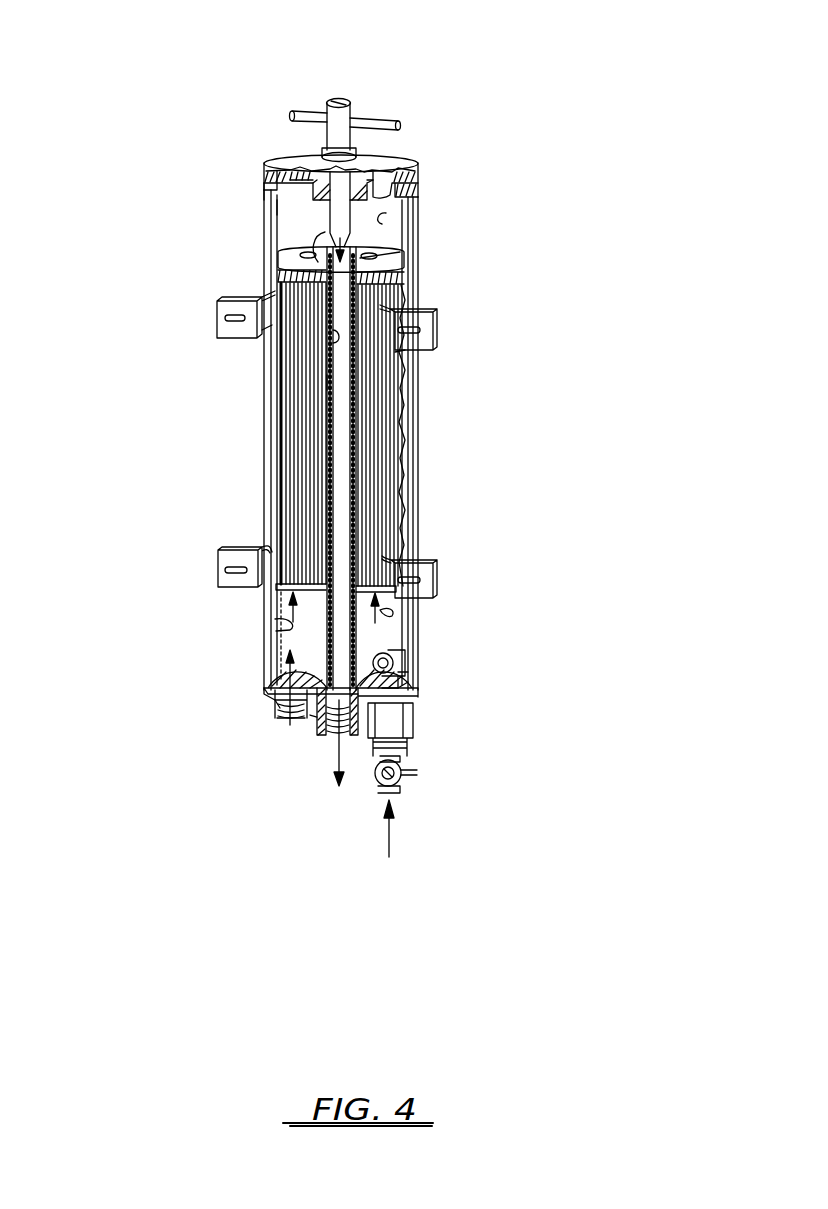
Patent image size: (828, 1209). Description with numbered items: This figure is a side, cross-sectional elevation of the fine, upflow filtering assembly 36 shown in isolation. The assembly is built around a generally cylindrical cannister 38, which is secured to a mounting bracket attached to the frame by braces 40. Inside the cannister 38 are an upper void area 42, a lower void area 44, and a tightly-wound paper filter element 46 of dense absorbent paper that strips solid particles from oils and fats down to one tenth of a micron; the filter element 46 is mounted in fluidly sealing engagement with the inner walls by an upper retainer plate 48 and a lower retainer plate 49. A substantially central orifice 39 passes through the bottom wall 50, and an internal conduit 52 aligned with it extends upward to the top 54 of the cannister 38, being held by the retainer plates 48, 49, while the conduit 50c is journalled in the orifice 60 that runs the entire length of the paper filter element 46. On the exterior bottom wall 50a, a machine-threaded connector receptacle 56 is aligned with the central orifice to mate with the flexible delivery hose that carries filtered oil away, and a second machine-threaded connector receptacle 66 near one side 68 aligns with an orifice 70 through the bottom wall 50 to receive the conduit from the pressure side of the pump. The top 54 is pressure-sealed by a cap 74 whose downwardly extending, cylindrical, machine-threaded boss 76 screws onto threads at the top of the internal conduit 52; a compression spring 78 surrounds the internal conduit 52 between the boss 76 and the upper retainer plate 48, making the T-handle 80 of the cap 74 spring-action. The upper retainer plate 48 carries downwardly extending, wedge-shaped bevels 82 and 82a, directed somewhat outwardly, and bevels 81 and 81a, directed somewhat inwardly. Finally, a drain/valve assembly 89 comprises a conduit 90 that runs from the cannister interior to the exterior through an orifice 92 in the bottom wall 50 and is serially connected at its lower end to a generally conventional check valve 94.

The fine filtering assembly 36 is at (430, 410).
The cannister 38 is at (382, 268).
The central orifice 39 is at (322, 737).
The braces 40 is at (222, 326).
The upper void area 42 is at (384, 222).
The lower void area 44 is at (396, 614).
The paper filter element 46 is at (400, 497).
The upper retainer plate 48 is at (385, 258).
The lower retainer plate 49 is at (283, 590).
The bottom wall 50 is at (312, 717).
The exterior bottom wall 50a is at (273, 703).
The conduit 50c is at (276, 631).
The internal conduit 52 is at (333, 337).
The top 54 is at (267, 184).
The connector receptacle 56 is at (363, 735).
The orifice 60 is at (327, 380).
The connector receptacle 66 is at (280, 713).
The side 68 is at (266, 688).
The orifice 70 is at (267, 692).
The cap 74 is at (392, 167).
The boss 76 is at (310, 190).
The compression spring 78 is at (330, 227).
The T-handle 80 is at (371, 118).
The bevel 81 is at (272, 332).
The bevel 81a is at (400, 360).
The bevel 82 is at (310, 270).
The bevel 82a is at (368, 283).
The drain/valve assembly 89 is at (417, 720).
The conduit 90 is at (406, 660).
The orifice 92 is at (406, 668).
The check valve 94 is at (403, 762).